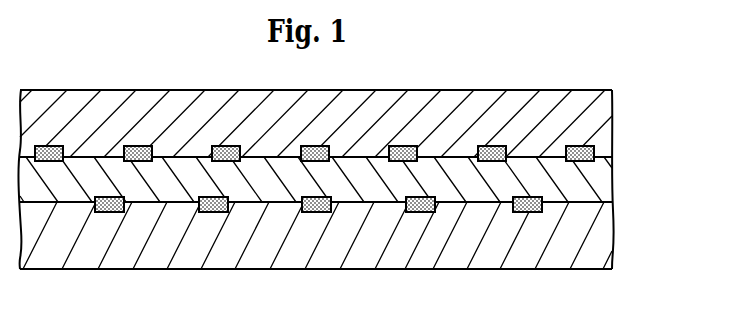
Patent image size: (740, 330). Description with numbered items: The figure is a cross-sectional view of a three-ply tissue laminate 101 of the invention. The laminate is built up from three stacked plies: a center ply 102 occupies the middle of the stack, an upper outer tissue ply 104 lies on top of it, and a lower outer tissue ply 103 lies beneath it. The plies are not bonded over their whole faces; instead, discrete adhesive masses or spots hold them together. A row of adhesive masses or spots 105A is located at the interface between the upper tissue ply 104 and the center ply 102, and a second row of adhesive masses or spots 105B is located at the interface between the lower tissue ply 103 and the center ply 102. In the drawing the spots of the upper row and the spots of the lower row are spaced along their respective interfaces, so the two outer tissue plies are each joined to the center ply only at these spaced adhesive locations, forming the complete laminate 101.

The laminate 101 is at (52, 81).
The center ply 102 is at (593, 180).
The lower outer tissue ply 103 is at (490, 260).
The upper outer tissue ply 104 is at (515, 98).
The adhesive masses or spots between upper tissue ply and center ply 105A is at (218, 146).
The adhesive masses or spots between lower tissue ply and center ply 105B is at (225, 210).